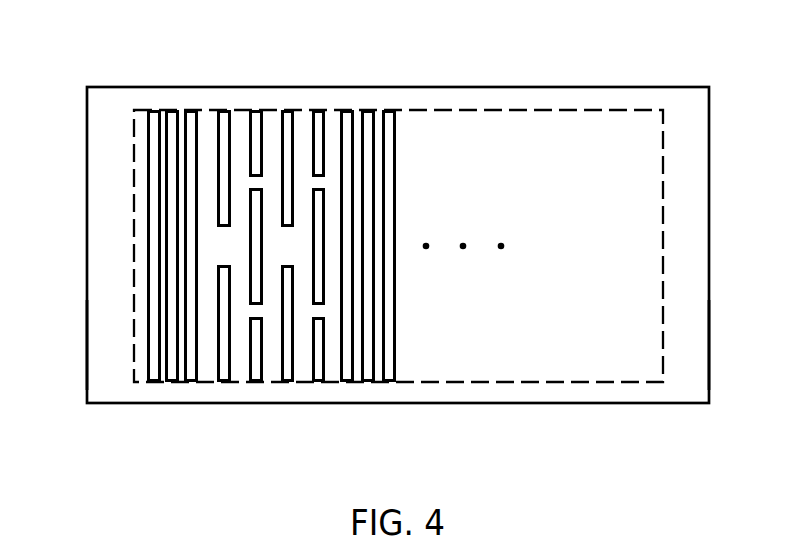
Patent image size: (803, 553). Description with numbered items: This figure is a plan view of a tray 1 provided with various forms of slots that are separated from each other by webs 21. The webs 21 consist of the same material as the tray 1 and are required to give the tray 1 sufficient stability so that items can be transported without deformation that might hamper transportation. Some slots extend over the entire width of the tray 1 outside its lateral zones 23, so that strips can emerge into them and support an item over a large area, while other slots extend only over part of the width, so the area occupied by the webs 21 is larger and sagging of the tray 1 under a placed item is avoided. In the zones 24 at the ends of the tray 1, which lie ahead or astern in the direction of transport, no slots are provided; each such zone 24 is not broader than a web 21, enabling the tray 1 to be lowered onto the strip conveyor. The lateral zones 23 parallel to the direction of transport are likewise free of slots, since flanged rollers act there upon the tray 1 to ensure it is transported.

The tray 1 is at (645, 175).
The webs 21 is at (120, 202).
The lateral zones 23 is at (627, 95).
The zones 24 is at (102, 340).